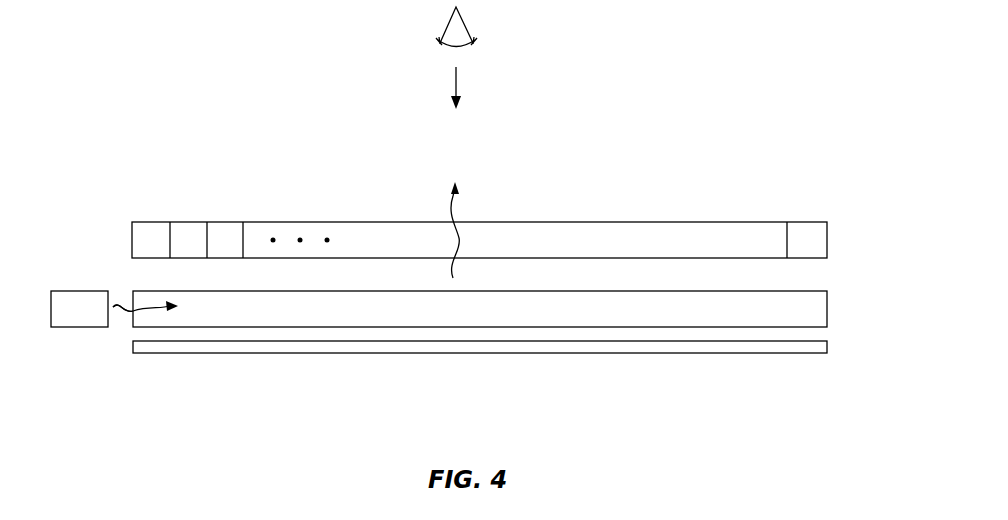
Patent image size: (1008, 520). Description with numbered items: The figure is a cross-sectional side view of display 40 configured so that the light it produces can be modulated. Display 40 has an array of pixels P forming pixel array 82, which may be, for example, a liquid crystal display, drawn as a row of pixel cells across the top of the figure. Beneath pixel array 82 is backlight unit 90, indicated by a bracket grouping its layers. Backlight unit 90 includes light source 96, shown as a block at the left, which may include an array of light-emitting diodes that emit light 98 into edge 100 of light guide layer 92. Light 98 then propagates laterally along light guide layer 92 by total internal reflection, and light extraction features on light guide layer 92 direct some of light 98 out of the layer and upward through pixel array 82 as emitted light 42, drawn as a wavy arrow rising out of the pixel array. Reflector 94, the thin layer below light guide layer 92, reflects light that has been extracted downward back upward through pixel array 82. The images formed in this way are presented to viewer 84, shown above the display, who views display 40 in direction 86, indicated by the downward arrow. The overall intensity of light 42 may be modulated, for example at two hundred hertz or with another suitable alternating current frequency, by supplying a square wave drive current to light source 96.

The display 40 is at (848, 186).
The light 42 is at (455, 207).
The pixel array 82 is at (102, 235).
The viewer 84 is at (464, 22).
The direction 86 is at (456, 84).
The backlight unit 90 is at (507, 348).
The light guide layer 92 is at (297, 313).
The reflector 94 is at (367, 348).
The light source 96 is at (72, 327).
The light 98 is at (112, 306).
The edge 100 is at (127, 312).